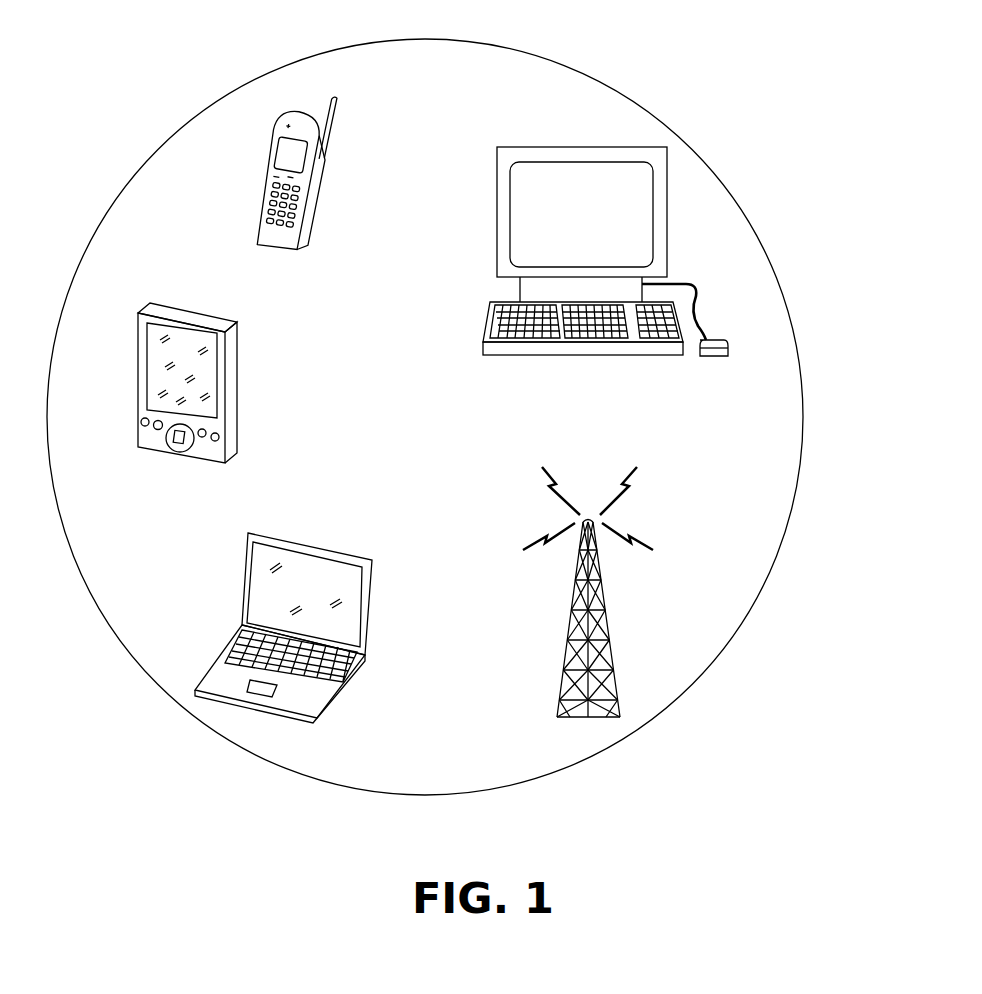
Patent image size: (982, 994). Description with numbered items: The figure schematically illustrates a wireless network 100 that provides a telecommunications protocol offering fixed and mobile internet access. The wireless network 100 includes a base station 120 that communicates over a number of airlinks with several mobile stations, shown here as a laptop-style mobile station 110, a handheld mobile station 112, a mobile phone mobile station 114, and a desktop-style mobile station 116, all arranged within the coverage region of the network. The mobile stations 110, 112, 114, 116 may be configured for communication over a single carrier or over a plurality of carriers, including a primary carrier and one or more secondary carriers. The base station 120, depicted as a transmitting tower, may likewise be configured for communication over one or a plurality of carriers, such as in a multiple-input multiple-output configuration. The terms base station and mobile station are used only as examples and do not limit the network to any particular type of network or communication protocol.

The wireless network 100 is at (863, 79).
The mobile station 110 is at (313, 545).
The mobile station 112 is at (240, 407).
The mobile station 114 is at (268, 157).
The mobile station 116 is at (560, 146).
The base station 120 is at (610, 647).